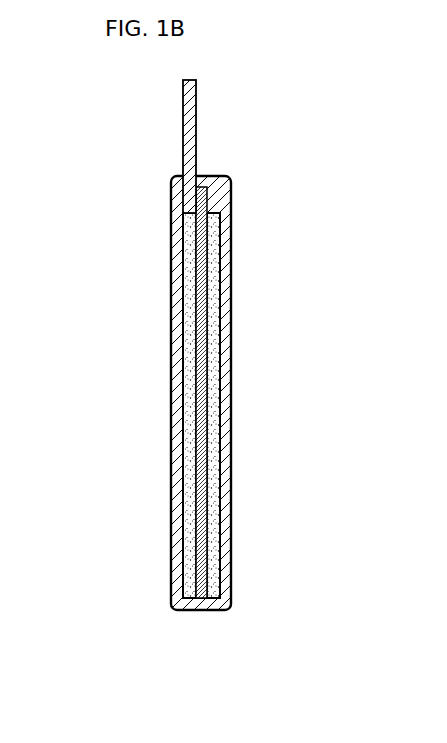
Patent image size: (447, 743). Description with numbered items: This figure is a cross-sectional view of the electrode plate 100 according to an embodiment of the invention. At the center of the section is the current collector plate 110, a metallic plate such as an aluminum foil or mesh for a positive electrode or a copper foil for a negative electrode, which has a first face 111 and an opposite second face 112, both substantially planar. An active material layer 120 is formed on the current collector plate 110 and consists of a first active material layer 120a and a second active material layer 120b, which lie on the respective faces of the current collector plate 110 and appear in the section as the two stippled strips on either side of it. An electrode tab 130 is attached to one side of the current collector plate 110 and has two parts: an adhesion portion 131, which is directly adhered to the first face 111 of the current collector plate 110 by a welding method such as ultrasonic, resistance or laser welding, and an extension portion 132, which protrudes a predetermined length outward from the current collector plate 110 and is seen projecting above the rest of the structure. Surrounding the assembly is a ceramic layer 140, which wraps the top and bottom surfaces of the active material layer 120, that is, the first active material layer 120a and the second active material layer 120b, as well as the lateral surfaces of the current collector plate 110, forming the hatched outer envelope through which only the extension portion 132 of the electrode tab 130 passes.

The electrode plate 100 is at (258, 144).
The current collector plate 110 is at (218, 266).
The first face 111 is at (190, 331).
The second face 112 is at (207, 395).
The active material layer 120 is at (237, 677).
The first active material layer 120a is at (215, 612).
The second active material layer 120b is at (187, 612).
The electrode tab 130 is at (97, 114).
The adhesion portion 131 is at (184, 198).
The extension portion 132 is at (183, 122).
The ceramic layer 140 is at (231, 327).